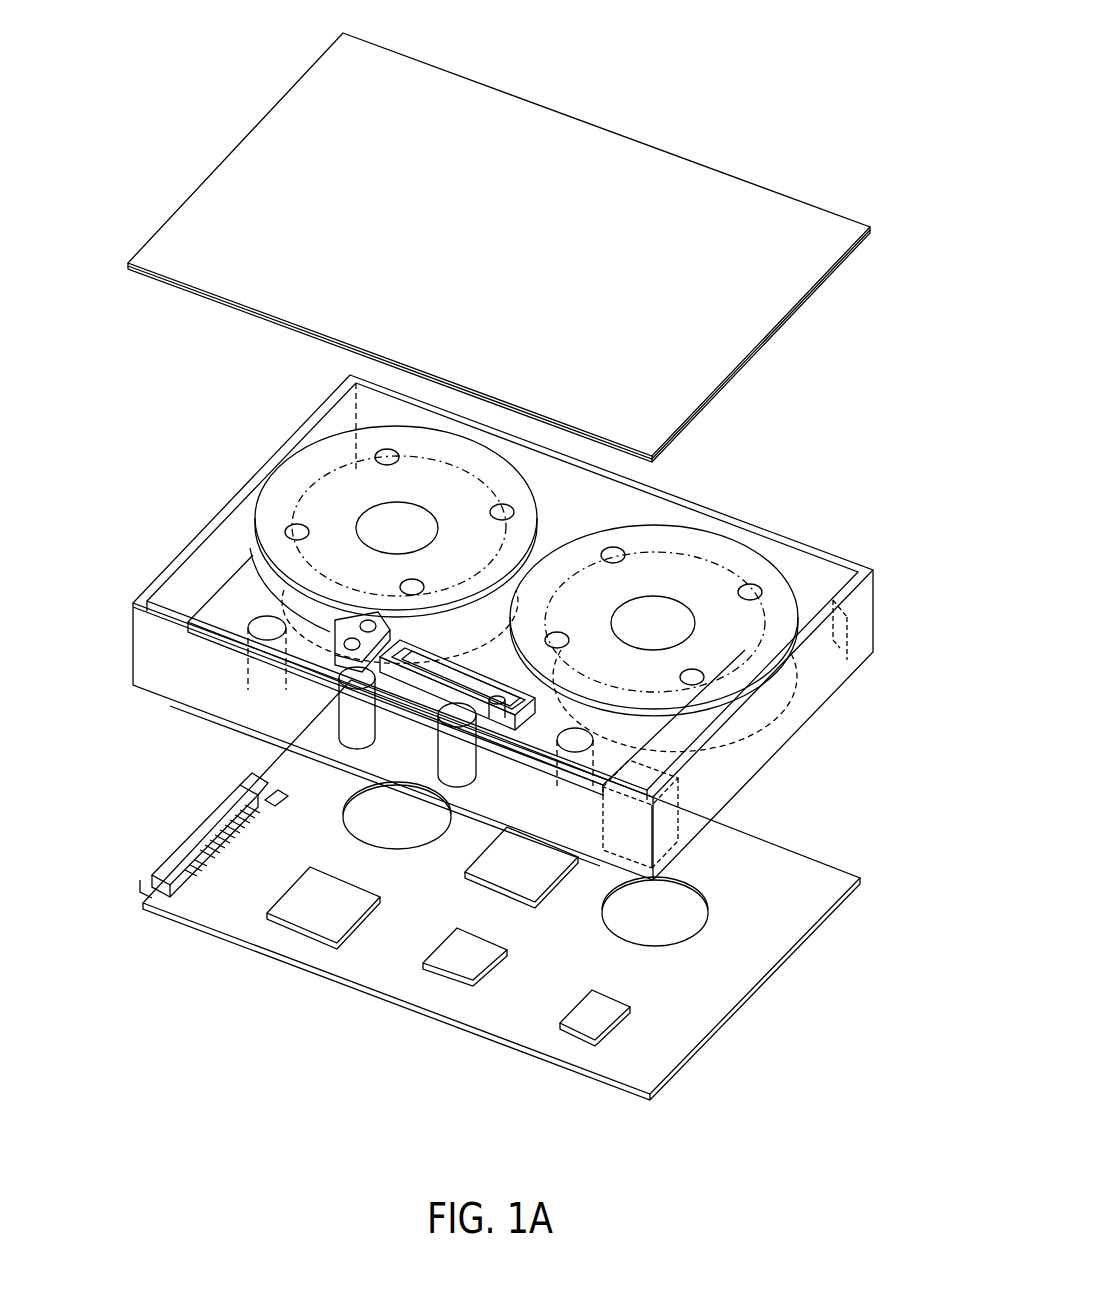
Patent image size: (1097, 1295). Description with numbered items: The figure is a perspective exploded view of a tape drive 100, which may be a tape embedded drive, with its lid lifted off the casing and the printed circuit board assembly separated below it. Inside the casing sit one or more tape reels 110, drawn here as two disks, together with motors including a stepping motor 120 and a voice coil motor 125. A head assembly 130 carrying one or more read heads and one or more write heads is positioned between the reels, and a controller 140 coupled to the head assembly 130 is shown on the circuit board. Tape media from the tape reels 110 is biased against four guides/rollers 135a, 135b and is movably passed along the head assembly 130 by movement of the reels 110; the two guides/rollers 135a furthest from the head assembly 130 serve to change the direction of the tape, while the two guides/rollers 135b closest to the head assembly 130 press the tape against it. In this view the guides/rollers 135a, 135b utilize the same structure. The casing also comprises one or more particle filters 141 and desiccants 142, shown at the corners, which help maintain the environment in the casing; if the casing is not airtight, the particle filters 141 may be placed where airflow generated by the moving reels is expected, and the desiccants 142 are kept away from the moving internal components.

The tape drive 100 is at (773, 95).
The tape reels 110 is at (453, 435).
The stepping motor 120 is at (320, 643).
The voice coil motor 125 is at (407, 627).
The head assembly 130 is at (443, 663).
The guides/rollers 135a is at (260, 625).
The guides/rollers 135b is at (333, 680).
The controller 140 is at (400, 750).
The particle filters 141 is at (848, 628).
The desiccants 142 is at (668, 818).